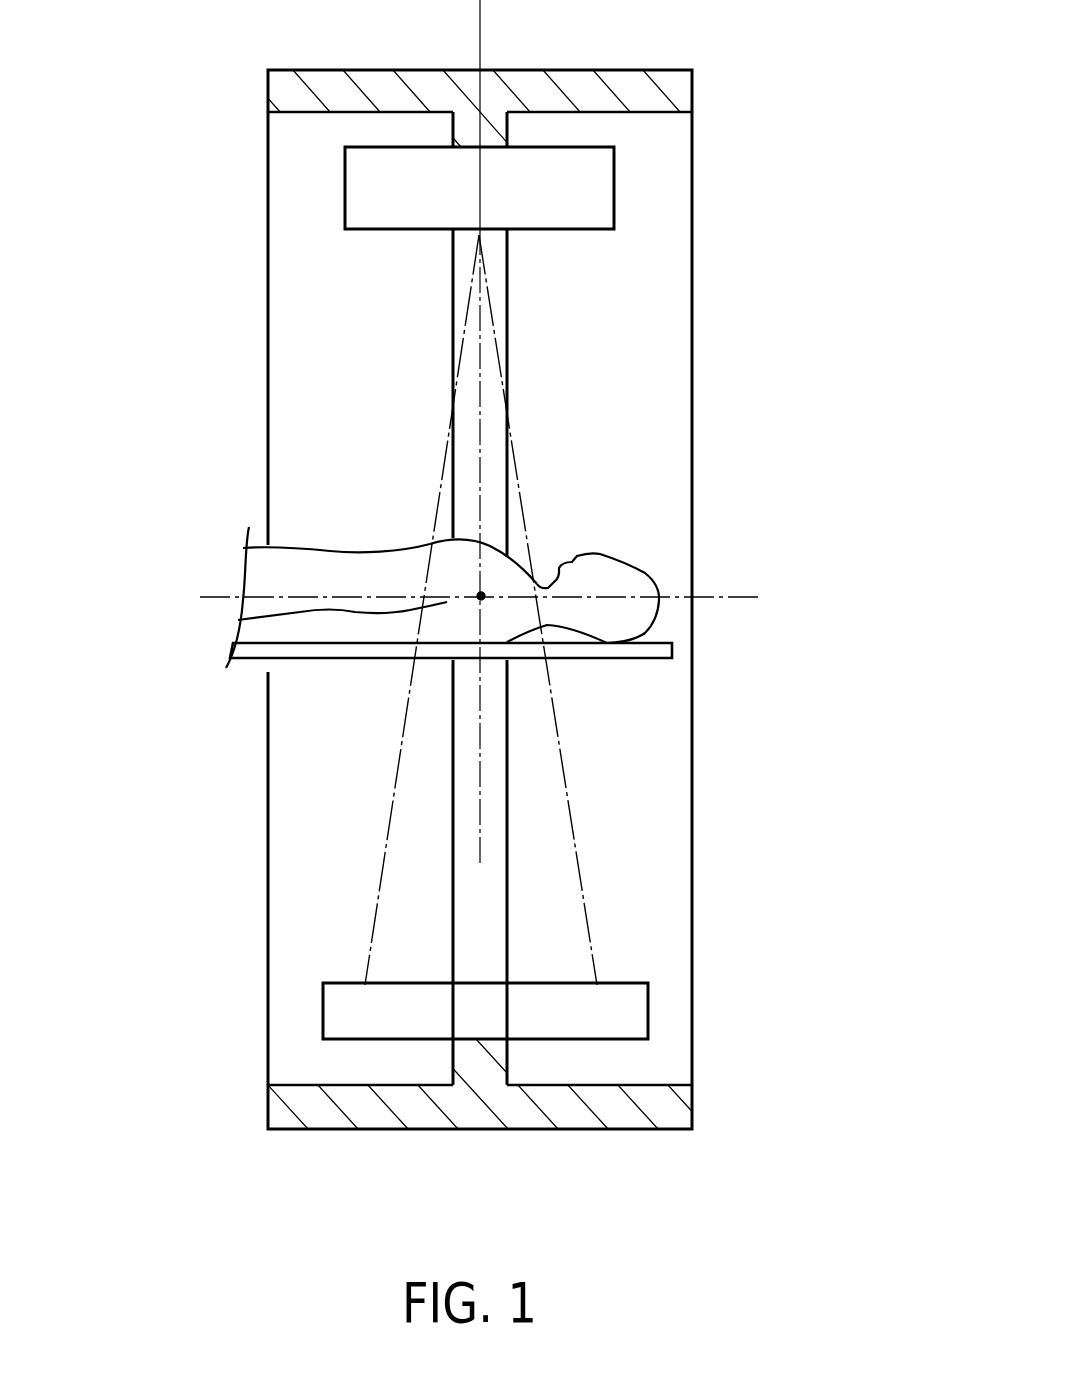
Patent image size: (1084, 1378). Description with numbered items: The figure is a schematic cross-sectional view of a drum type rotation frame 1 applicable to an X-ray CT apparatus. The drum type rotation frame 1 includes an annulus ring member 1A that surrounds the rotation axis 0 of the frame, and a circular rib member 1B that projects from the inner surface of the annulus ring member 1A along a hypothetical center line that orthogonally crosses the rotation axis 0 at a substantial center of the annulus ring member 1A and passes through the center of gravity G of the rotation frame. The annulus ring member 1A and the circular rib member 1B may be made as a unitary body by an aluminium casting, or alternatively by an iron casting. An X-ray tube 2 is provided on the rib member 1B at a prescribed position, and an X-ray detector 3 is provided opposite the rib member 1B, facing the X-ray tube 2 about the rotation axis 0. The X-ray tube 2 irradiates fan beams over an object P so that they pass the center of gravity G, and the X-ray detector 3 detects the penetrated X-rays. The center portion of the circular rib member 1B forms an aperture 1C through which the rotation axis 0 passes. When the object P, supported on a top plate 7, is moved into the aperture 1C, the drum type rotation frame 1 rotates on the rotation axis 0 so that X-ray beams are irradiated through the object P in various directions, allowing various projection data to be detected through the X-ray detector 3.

The drum type rotation frame 1 is at (706, 345).
The annulus ring member 1A is at (578, 80).
The circular rib member 1B is at (498, 133).
The aperture 1C is at (500, 498).
The X-ray tube 2 is at (615, 190).
The X-ray detector 3 is at (648, 1010).
The top plate 7 is at (637, 658).
The object P is at (650, 572).
The center of gravity G is at (484, 593).
The rotation axis 0 is at (494, 598).